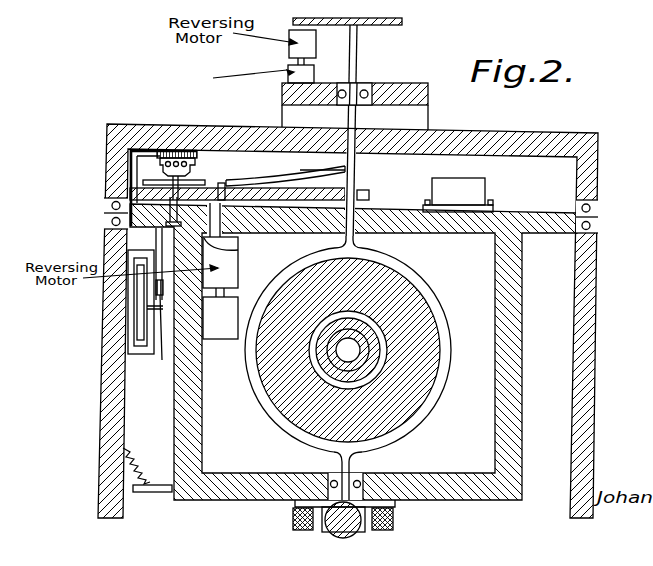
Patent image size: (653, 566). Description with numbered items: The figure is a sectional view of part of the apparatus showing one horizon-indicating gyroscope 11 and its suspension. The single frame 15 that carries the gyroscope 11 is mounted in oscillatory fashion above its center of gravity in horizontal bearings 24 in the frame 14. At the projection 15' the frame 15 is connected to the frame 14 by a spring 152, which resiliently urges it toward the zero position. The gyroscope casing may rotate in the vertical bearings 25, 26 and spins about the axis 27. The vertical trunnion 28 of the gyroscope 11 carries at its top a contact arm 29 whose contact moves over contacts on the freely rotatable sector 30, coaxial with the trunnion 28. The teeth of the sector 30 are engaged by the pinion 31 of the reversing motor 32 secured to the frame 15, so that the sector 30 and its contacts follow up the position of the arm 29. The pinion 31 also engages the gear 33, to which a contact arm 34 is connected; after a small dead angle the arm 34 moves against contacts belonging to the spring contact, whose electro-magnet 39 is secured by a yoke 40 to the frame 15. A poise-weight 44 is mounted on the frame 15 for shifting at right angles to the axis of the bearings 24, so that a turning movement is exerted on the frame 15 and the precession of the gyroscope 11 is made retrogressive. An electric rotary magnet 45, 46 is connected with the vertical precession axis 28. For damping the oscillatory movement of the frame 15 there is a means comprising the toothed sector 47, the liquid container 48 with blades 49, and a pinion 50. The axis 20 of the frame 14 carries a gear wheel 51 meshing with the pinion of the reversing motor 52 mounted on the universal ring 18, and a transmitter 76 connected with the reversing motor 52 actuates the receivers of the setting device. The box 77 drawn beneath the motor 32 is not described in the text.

The gyroscope 11 is at (418, 317).
The frame 14 is at (587, 417).
The frame 15 is at (353, 355).
The projection 15' is at (152, 513).
The spring 152 is at (153, 433).
The universal ring 18 is at (400, 86).
The axis 20 is at (356, 123).
The horizontal bearings 24 is at (103, 207).
The vertical bearing 25 is at (362, 238).
The vertical bearing 26 is at (366, 486).
The axis 27 is at (342, 368).
The vertical trunnion 28 is at (355, 183).
The contact arm 29 is at (323, 170).
The sector 30 is at (283, 187).
The pinion 31 is at (220, 190).
The reversing motor 32 is at (228, 258).
The gear 33 is at (128, 170).
The contact arm 34 is at (238, 245).
The electro-magnet 39 is at (200, 160).
The yoke 40 is at (177, 152).
The poise-weight 44 is at (485, 185).
The electric rotary magnet 45 is at (344, 532).
The electric rotary magnet 46 is at (293, 522).
The toothed sector 47 is at (160, 231).
The liquid container 48 is at (132, 344).
The blades 49 is at (134, 316).
The pinion 50 is at (157, 330).
The gear wheel 51 is at (382, 27).
The reversing motor 52 is at (288, 50).
The transmitter 76 is at (285, 80).
The box 77 is at (222, 342).